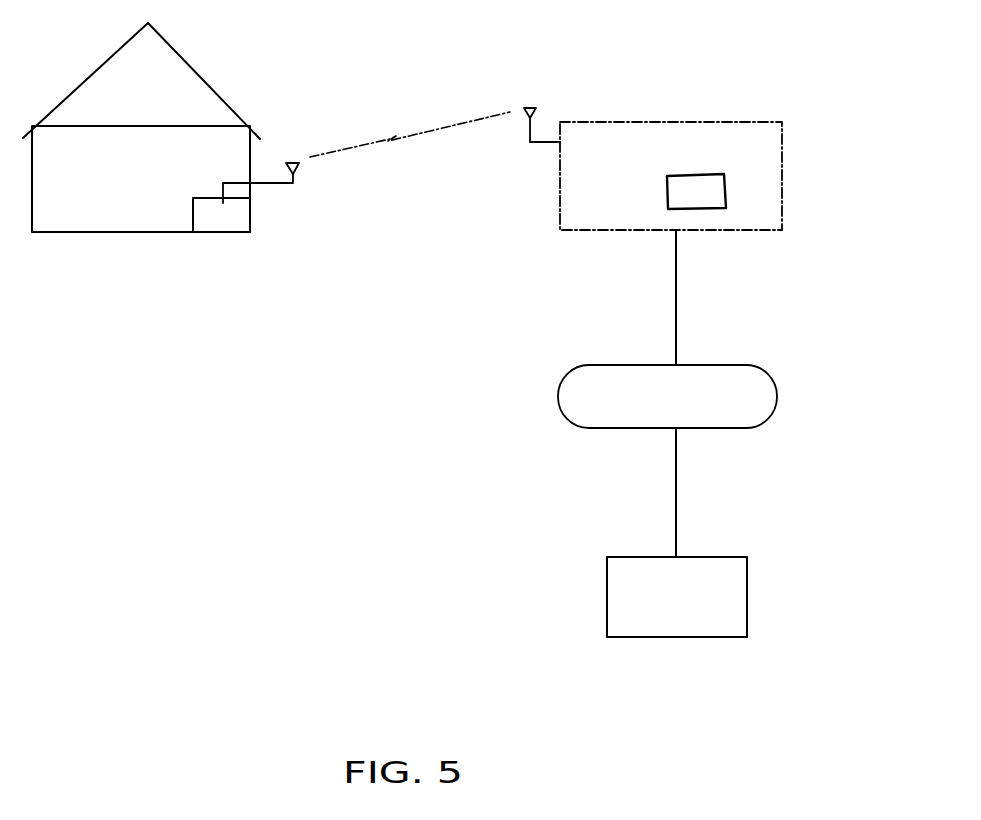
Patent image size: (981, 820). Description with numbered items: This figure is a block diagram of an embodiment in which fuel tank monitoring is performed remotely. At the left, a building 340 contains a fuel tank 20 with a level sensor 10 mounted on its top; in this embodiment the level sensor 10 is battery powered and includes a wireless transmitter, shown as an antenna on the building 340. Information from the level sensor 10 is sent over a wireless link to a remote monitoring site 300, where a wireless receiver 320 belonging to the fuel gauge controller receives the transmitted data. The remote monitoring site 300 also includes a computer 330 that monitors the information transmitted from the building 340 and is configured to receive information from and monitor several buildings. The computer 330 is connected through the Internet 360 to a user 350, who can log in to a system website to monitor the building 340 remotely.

The building 340 is at (322, 183).
The level sensor 10 is at (249, 215).
The fuel tank 20 is at (205, 266).
The wireless receiver 320 is at (578, 115).
The remote monitoring site 300 is at (700, 149).
The computer 330 is at (788, 180).
The Internet 360 is at (722, 396).
The user 350 is at (735, 597).